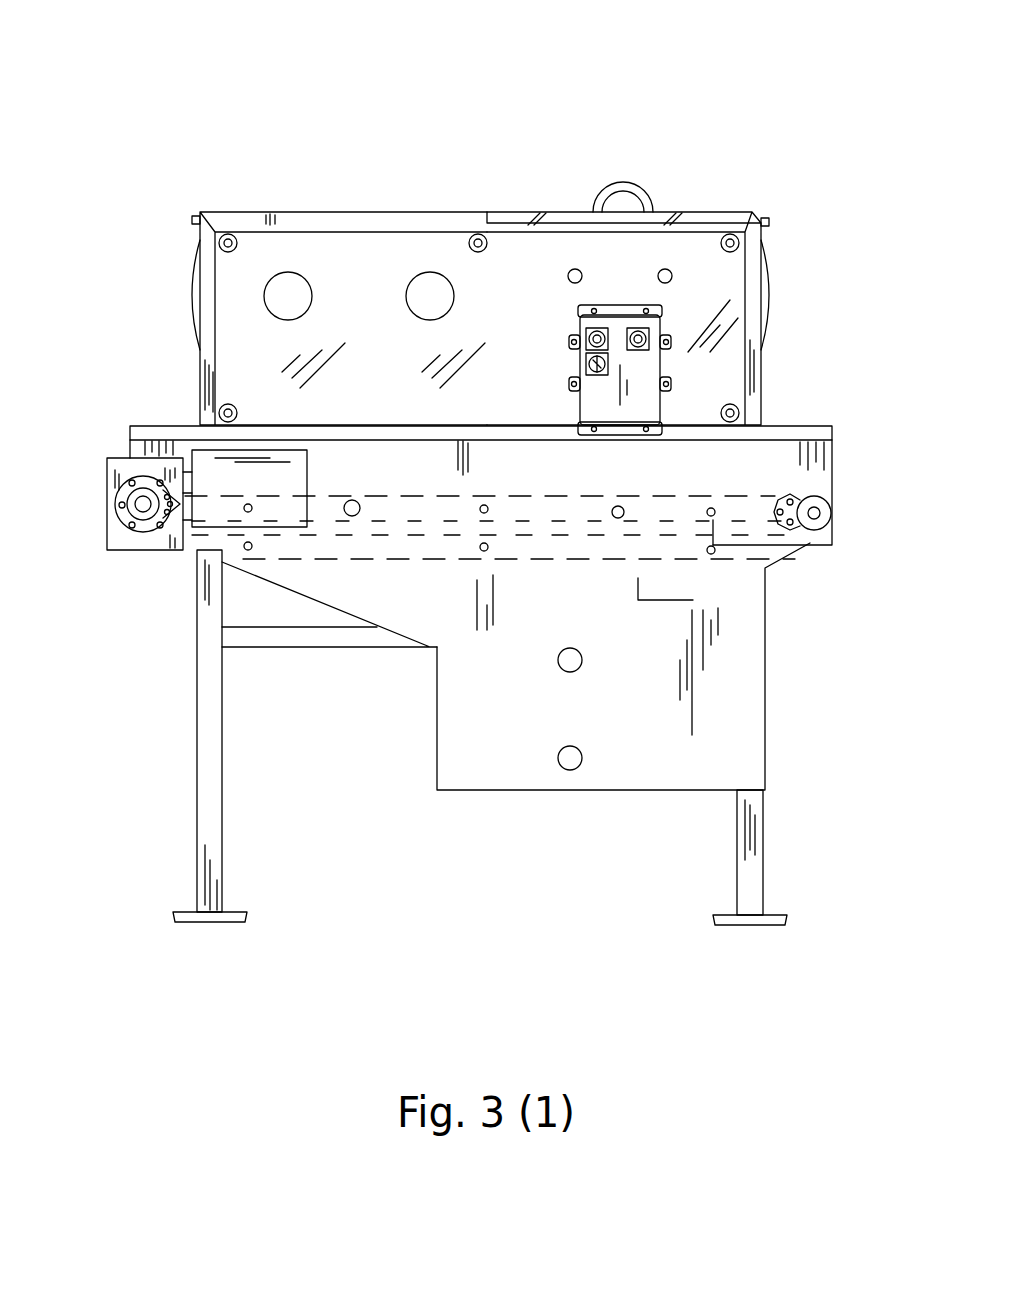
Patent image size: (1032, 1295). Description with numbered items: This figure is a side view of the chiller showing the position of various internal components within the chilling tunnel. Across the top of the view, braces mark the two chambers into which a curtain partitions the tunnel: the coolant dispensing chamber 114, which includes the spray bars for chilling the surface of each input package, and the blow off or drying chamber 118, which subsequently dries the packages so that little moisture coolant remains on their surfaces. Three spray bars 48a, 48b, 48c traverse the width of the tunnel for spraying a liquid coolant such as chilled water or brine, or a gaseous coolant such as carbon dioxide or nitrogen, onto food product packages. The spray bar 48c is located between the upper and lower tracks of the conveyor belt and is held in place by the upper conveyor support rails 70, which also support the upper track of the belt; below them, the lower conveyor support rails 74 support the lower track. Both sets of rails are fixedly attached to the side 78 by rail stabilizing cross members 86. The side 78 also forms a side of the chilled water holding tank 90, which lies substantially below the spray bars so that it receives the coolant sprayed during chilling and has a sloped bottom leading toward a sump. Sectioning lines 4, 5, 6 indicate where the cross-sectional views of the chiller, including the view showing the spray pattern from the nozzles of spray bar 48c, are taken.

The drying chamber 118 is at (487, 212).
The coolant dispensing chamber 114 is at (760, 212).
The spray bar 48a is at (660, 282).
The spray bar 48b is at (568, 282).
The spray bar 48c is at (623, 506).
The upper conveyor support rail 70 is at (418, 508).
The lower conveyor support rail 74 is at (372, 553).
The side 78 is at (597, 704).
The rail stabilizing cross member 86 is at (246, 511).
The chilled water holding tank 90 is at (404, 706).
The sectioning line 4 is at (65, 425).
The sectioning line 5 is at (713, 200).
The sectioning line 6 is at (645, 153).